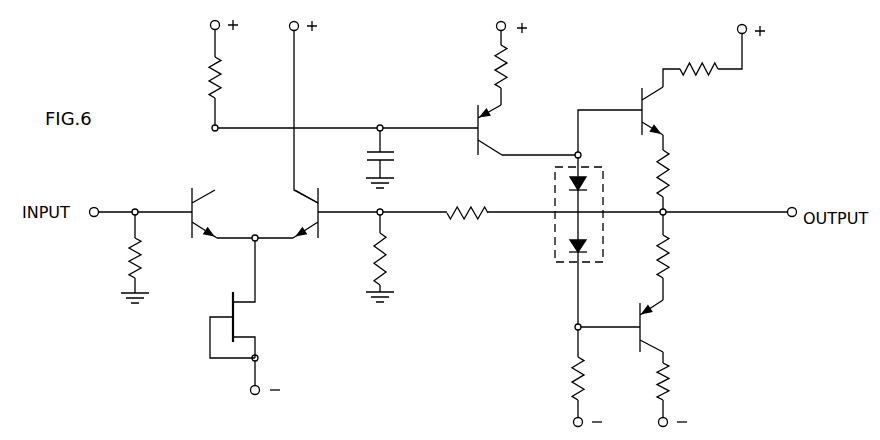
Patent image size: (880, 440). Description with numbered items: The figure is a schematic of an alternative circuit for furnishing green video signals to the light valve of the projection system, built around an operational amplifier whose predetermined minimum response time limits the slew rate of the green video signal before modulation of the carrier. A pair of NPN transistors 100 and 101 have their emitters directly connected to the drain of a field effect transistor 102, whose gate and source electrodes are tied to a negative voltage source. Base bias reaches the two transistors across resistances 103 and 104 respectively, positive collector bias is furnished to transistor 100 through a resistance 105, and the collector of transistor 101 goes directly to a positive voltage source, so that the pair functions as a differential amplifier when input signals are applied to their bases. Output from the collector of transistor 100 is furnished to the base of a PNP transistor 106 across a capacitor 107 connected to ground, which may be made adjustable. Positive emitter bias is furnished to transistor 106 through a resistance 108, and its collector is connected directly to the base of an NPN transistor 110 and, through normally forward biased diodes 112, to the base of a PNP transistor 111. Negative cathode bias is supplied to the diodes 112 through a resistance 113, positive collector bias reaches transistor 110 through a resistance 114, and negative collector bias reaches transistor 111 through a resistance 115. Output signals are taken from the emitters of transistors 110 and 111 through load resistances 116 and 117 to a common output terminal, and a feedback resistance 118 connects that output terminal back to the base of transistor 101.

The NPN transistor 100 is at (189, 203).
The NPN transistor 101 is at (321, 201).
The field effect transistor 102 is at (228, 297).
The resistance 103 is at (142, 250).
The resistance 104 is at (366, 258).
The resistance 105 is at (207, 76).
The PNP transistor 106 is at (475, 143).
The capacitor 107 is at (400, 159).
The resistance 108 is at (491, 64).
The NPN transistor 110 is at (638, 100).
The PNP transistor 111 is at (636, 318).
The diodes 112 is at (553, 183).
The resistance 113 is at (568, 372).
The resistance 114 is at (707, 82).
The resistance 115 is at (677, 373).
The load resistance 116 is at (676, 162).
The load resistance 117 is at (677, 248).
The feedback resistance 118 is at (466, 226).